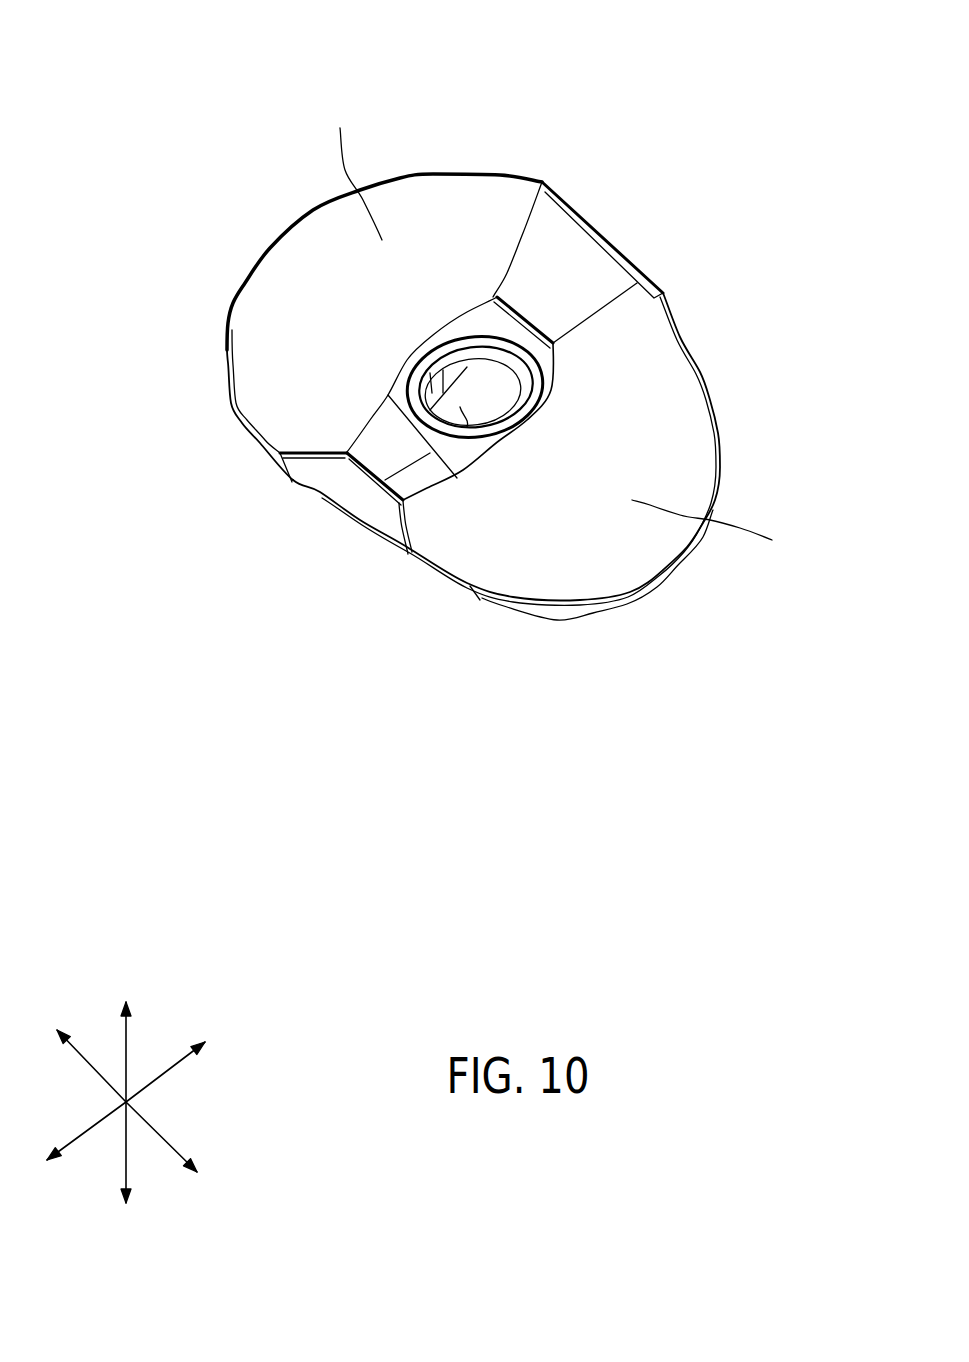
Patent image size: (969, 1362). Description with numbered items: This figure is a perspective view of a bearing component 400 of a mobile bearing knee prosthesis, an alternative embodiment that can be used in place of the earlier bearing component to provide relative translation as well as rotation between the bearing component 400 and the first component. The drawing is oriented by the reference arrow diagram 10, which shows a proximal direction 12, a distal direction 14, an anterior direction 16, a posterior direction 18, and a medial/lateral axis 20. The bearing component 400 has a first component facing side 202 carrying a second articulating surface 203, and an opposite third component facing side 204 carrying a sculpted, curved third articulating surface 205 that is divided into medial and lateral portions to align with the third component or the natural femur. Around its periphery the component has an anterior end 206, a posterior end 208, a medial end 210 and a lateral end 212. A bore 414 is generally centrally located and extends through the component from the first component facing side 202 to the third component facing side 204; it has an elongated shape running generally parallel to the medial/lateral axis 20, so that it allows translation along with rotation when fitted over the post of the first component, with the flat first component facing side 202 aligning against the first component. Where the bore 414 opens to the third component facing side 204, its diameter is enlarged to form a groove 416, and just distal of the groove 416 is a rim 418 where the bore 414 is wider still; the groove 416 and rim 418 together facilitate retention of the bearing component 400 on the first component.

The bearing component 400 is at (533, 130).
The third articulating surface 205 is at (574, 327).
The lateral end 212 is at (237, 287).
The third component facing side 204 is at (627, 405).
The medial end 210 is at (650, 587).
The first component facing side 202 is at (570, 620).
The second articulating surface 203 is at (487, 600).
The posterior end 208 is at (627, 250).
The anterior end 206 is at (313, 487).
The bore 414 is at (380, 480).
The groove 416 is at (443, 350).
The rim 418 is at (513, 333).
The reference arrow diagram 10 is at (85, 972).
The proximal direction 12 is at (128, 1047).
The distal direction 14 is at (128, 1158).
The anterior direction 16 is at (77, 1140).
The posterior direction 18 is at (173, 1060).
The medial/lateral axis 20 is at (90, 1060).